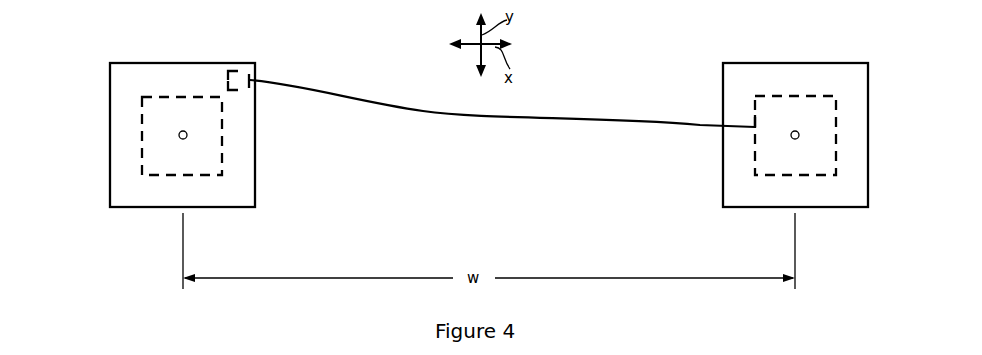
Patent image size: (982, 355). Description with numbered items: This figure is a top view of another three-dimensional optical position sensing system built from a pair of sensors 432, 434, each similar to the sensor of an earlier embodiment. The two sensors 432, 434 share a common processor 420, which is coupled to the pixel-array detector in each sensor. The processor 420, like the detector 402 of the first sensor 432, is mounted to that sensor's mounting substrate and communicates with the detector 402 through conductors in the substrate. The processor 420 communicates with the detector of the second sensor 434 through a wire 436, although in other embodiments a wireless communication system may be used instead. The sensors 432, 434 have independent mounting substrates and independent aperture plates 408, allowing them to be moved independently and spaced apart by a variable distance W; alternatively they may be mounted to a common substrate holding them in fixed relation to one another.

The detector 402 is at (150, 122).
The aperture plate 408 is at (134, 72).
The processor 420 is at (238, 73).
The sensor 432 is at (137, 193).
The sensor 434 is at (838, 190).
The wire 436 is at (423, 112).